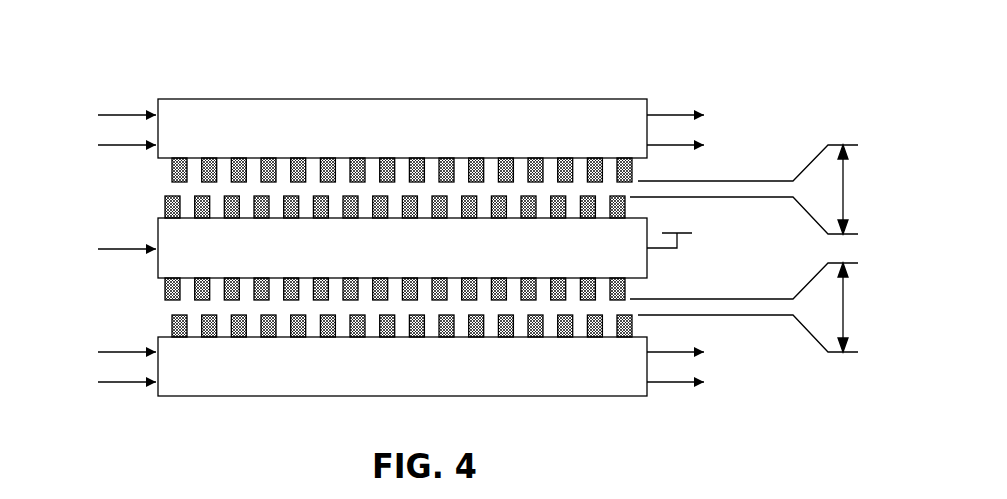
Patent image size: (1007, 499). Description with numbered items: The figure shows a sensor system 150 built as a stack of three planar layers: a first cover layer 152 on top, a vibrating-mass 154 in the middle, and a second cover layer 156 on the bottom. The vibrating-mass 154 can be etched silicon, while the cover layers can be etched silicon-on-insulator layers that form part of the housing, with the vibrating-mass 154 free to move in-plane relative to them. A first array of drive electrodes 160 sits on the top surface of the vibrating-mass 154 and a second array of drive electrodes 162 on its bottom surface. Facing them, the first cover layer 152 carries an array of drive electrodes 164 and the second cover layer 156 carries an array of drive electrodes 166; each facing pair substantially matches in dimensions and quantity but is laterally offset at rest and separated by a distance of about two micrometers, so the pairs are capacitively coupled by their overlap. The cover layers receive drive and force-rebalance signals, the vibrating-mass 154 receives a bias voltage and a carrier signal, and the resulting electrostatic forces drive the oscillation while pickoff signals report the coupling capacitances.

The sensor system 150 is at (108, 24).
The first cover layer 152 is at (200, 99).
The vibrating-mass 154 is at (158, 218).
The second cover layer 156 is at (198, 397).
The first array of drive electrodes 160 is at (262, 217).
The second array of drive electrodes 162 is at (321, 279).
The array of drive electrodes 164 is at (328, 159).
The array of drive electrodes 166 is at (298, 336).